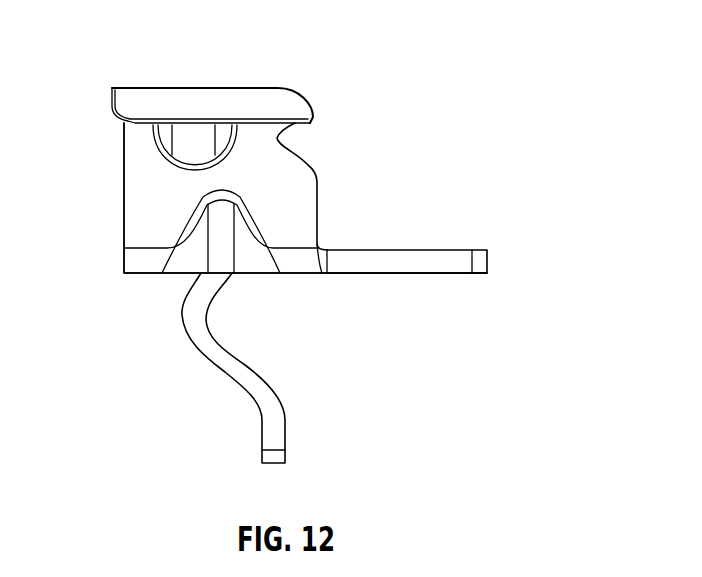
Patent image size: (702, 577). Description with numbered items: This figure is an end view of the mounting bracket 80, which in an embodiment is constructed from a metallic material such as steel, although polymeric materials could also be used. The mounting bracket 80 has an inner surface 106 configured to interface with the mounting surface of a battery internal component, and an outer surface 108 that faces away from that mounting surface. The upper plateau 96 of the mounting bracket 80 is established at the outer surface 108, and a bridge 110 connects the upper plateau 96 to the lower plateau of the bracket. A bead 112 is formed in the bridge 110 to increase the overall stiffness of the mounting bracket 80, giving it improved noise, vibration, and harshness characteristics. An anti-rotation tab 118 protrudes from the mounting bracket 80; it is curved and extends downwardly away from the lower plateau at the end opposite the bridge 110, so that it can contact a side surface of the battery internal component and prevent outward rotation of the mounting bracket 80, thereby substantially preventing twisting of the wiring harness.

The mounting bracket 80 is at (352, 221).
The upper plateau 96 is at (215, 102).
The inner surface 106 is at (414, 295).
The outer surface 108 is at (445, 221).
The bridge 110 is at (138, 208).
The bead 112 is at (223, 258).
The anti-rotation tab 118 is at (247, 378).